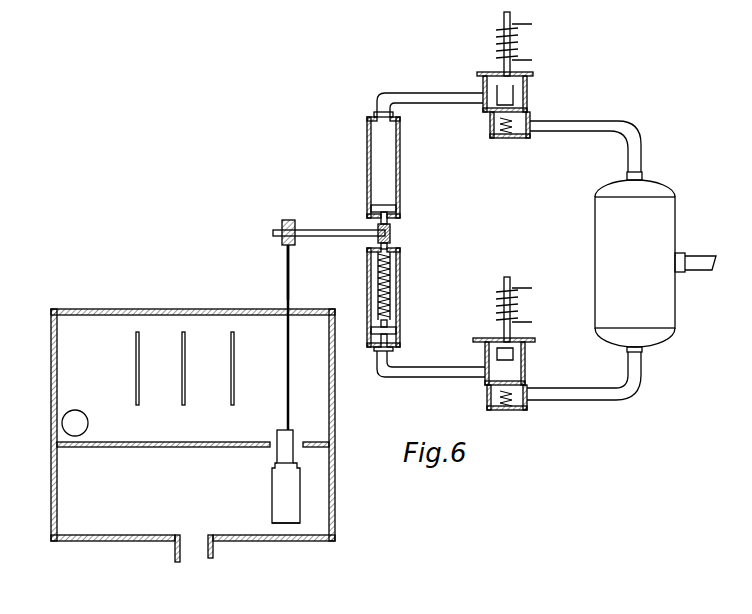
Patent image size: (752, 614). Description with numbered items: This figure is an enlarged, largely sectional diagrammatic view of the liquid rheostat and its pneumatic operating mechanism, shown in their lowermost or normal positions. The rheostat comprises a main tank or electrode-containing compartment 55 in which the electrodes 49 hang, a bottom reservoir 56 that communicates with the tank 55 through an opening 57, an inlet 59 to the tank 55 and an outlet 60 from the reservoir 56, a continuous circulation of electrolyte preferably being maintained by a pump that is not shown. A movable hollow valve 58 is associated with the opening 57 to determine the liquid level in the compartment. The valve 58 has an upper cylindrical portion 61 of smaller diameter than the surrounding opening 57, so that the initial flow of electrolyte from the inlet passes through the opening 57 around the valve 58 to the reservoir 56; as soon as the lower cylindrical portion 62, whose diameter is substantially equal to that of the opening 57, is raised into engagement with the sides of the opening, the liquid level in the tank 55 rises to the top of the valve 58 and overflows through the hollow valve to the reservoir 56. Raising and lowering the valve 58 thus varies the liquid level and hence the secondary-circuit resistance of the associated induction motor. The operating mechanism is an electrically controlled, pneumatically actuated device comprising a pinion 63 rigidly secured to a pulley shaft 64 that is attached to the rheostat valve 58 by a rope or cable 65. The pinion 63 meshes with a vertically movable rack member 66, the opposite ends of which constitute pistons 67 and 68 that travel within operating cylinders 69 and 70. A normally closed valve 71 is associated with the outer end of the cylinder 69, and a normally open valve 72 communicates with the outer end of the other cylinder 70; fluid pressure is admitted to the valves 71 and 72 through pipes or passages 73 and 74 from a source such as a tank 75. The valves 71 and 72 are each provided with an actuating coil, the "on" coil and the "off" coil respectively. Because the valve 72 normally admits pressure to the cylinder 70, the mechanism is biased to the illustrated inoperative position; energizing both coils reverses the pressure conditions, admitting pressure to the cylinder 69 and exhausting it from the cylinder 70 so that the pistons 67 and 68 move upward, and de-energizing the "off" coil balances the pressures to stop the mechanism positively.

The electrodes 49 is at (232, 405).
The main tank 55 is at (57, 385).
The bottom reservoir 56 is at (57, 487).
The opening 57 is at (299, 442).
The hollow valve 58 is at (272, 486).
The inlet 59 is at (85, 414).
The outlet 60 is at (188, 558).
The upper cylindrical portion 61 is at (277, 455).
The lower cylindrical portion 62 is at (272, 512).
The pinion 63 is at (392, 234).
The pulley shaft 64 is at (338, 232).
The rope or cable 65 is at (288, 290).
The rack member 66 is at (380, 290).
The piston 67 is at (398, 330).
The piston 68 is at (398, 209).
The operating cylinder 69 is at (400, 297).
The operating cylinder 70 is at (400, 170).
The normally closed valve 71 is at (525, 370).
The normally open valve 72 is at (530, 108).
The pipe 73 is at (604, 405).
The pipe 74 is at (591, 124).
The tank 75 is at (676, 239).